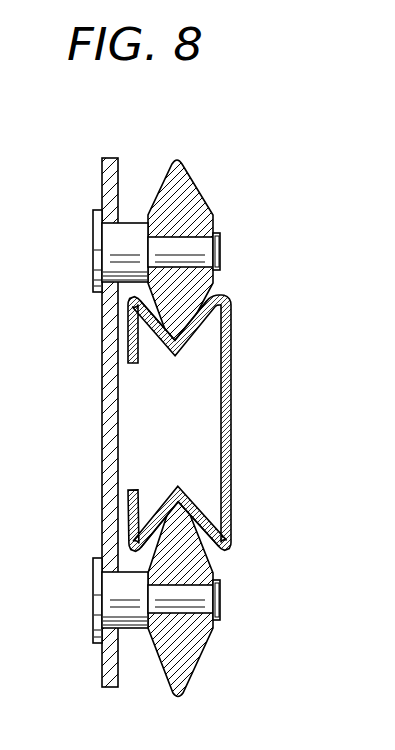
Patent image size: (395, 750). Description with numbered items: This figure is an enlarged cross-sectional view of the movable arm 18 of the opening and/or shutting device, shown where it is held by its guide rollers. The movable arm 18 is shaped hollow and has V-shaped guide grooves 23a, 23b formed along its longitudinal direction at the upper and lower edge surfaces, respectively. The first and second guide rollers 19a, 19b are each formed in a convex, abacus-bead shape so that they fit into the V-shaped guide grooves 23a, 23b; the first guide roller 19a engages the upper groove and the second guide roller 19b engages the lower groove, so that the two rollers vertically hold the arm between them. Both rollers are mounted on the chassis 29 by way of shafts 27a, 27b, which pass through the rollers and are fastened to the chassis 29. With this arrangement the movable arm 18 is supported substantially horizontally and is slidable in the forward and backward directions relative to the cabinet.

The movable arm 18 is at (232, 405).
The first guide roller 19a is at (207, 212).
The second guide roller 19b is at (198, 633).
The V-shaped guide groove 23a is at (172, 320).
The V-shaped guide groove 23b is at (163, 504).
The shaft 27a is at (130, 235).
The shaft 27b is at (127, 603).
The chassis 29 is at (110, 422).